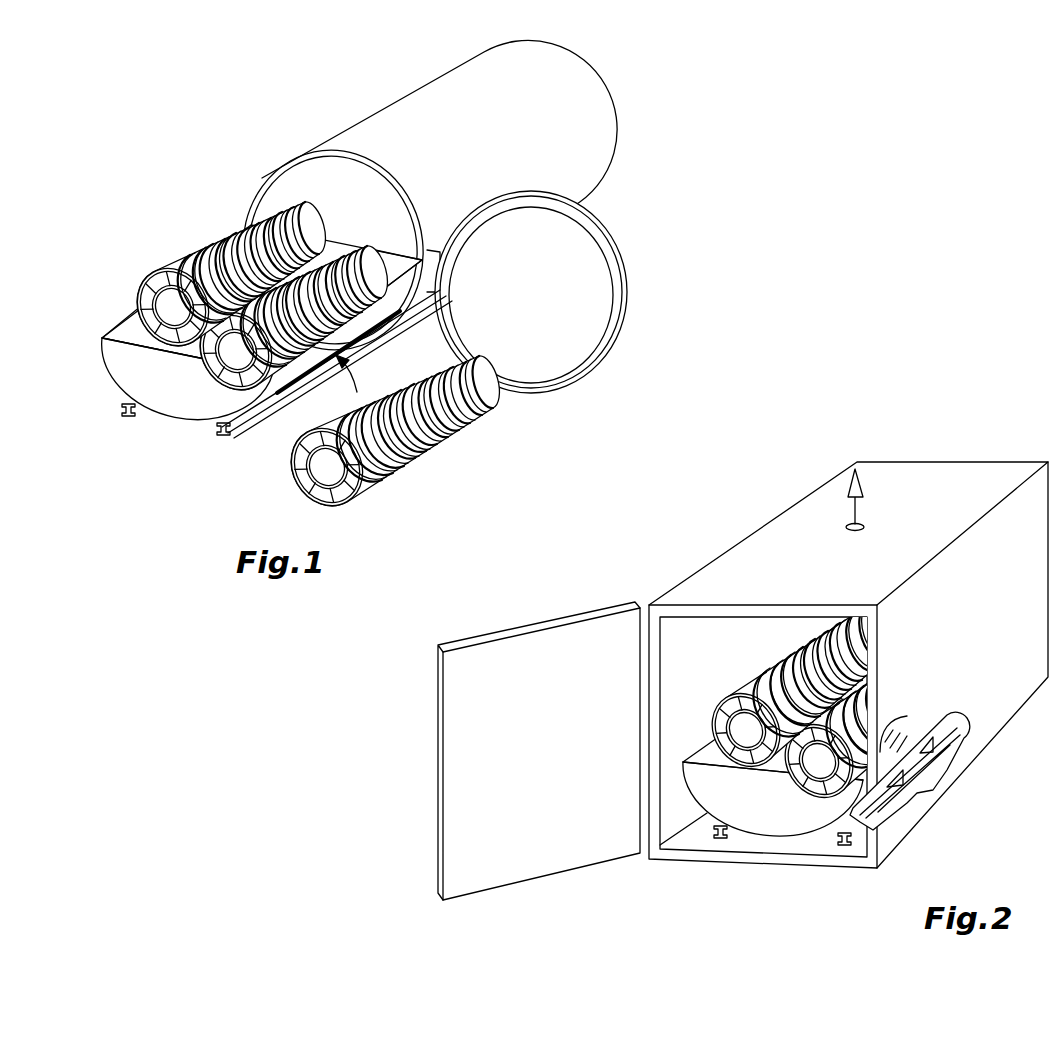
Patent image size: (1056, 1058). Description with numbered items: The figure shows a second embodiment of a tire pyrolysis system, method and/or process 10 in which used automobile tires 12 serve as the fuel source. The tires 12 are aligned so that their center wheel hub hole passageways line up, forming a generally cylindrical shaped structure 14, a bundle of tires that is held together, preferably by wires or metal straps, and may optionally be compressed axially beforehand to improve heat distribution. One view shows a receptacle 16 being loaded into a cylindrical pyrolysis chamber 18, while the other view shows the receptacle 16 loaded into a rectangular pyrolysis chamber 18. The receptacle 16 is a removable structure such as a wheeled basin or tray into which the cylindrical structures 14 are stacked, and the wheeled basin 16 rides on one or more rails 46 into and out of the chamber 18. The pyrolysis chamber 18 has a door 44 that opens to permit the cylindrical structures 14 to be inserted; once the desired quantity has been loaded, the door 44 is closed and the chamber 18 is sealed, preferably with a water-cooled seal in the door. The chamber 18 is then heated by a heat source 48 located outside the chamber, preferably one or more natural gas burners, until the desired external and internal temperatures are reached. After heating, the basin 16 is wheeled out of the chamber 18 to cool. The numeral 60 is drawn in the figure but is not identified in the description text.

In FIG. 2, the system, method and/or process 10 is at (743, 670).
In FIG. 1, the automobile tires 12 is at (381, 463).
In FIG. 1, the cylindrical shaped structure 14 is at (168, 280).
In FIG. 2, the cylindrical shaped structure 14 is at (730, 705).
In FIG. 2, the receptacle 16 is at (703, 790).
In FIG. 1, the pyrolysis chamber 18 is at (481, 73).
In FIG. 2, the pyrolysis chamber 18 is at (712, 581).
In FIG. 1, the door 44 is at (576, 284).
In FIG. 2, the door 44 is at (547, 643).
In FIG. 1, the rails 46 is at (122, 404).
In FIG. 2, the heat source 48 is at (880, 827).
In FIG. 1, the cradle 60 is at (197, 258).